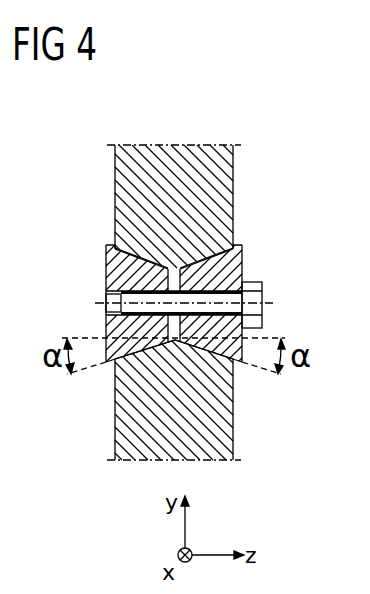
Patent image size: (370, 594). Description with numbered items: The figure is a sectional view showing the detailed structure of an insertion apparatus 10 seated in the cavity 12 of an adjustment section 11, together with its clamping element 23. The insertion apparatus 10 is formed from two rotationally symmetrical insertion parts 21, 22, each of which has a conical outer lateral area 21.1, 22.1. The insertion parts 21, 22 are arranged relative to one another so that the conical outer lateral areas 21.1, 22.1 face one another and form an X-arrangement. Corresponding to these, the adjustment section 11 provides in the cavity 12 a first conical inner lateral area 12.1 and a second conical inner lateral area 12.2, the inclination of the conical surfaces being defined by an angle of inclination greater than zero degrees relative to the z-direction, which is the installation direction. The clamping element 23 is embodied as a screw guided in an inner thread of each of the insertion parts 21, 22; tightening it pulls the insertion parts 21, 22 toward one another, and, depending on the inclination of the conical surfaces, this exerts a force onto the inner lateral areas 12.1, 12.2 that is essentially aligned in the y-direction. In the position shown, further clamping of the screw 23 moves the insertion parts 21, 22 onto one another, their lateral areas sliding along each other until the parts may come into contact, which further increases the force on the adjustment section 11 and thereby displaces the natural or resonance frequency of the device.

The clamping arrangement 10 is at (222, 115).
The adjustment section 11 is at (213, 204).
The cavity 12 is at (174, 400).
The first conical inner lateral area 12.1 is at (228, 358).
The second conical inner lateral area 12.2 is at (121, 358).
The insertion part 21 is at (242, 262).
The conical outer lateral area 21.1 is at (206, 241).
The insertion part 22 is at (106, 264).
The conical outer lateral area 22.1 is at (134, 252).
The clamping element 23 is at (262, 292).